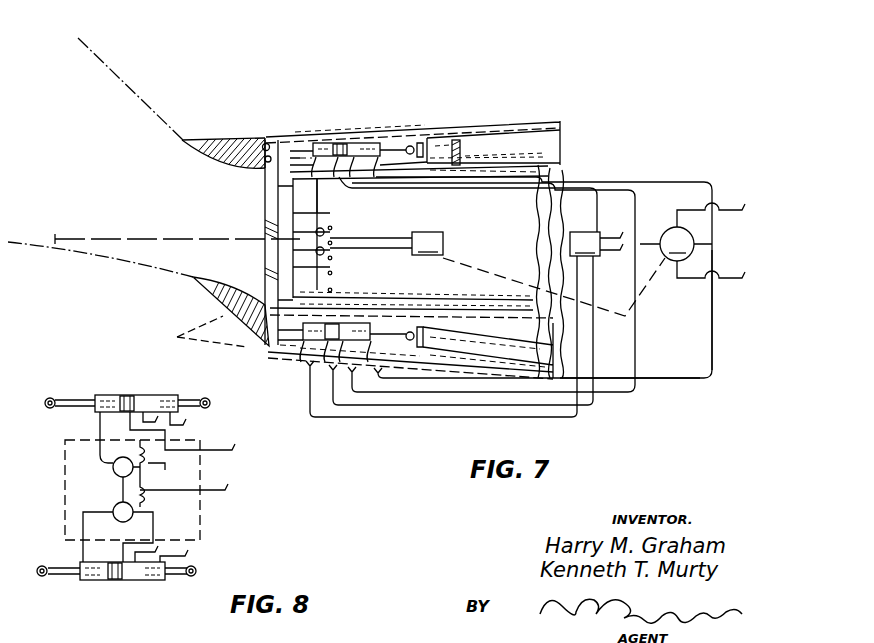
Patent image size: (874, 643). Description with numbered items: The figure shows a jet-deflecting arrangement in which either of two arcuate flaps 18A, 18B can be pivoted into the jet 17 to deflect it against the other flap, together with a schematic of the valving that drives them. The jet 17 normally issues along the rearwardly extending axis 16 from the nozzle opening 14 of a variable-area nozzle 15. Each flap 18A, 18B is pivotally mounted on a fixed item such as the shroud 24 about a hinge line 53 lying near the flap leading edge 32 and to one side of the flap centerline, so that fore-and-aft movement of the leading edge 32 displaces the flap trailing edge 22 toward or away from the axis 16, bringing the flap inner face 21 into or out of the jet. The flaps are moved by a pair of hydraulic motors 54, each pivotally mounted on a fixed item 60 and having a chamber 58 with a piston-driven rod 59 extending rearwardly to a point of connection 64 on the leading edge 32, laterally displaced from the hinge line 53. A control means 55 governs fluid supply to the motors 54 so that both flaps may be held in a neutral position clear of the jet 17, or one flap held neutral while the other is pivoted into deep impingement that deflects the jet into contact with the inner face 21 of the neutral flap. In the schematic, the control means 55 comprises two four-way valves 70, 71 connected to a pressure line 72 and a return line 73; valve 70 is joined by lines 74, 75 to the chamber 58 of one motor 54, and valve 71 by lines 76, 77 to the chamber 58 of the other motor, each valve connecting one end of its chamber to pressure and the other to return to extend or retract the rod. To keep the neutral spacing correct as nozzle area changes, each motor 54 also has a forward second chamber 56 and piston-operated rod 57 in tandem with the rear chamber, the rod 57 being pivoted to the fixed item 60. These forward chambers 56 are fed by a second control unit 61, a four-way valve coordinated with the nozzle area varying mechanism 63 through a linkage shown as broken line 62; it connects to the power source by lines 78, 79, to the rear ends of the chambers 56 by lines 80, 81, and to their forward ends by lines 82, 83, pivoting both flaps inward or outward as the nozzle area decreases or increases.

In FIG. 7, the nozzle opening 14 is at (300, 258).
In FIG. 7, the nozzle 15 is at (548, 176).
In FIG. 7, the rearwardly extending axis 16 is at (57, 238).
In FIG. 7, the jet 17 is at (112, 72).
In FIG. 7, the flap 18A is at (211, 160).
In FIG. 7, the flap 18B is at (212, 294).
In FIG. 7, the flap inner face 21 is at (228, 170).
In FIG. 7, the flap trailing edge 22 is at (183, 141).
In FIG. 7, the shroud 24 is at (548, 165).
In FIG. 7, the flap leading edge 32 is at (279, 140).
In FIG. 7, the hinge line 53 is at (267, 163).
In FIG. 7, the motor 54 is at (323, 135).
In FIG. 8, the motor 54 is at (115, 389).
In FIG. 7, the control means 55 is at (585, 244).
In FIG. 8, the control means 55 is at (65, 450).
In FIG. 7, the second chamber 56 is at (351, 143).
In FIG. 7, the piston-operated rod 57 is at (398, 144).
In FIG. 7, the chamber 58 is at (336, 143).
In FIG. 8, the chamber 58 is at (126, 395).
In FIG. 7, the piston-driven rod 59 is at (302, 140).
In FIG. 7, the fixed item 60 is at (493, 146).
In FIG. 7, the second control unit 61 is at (676, 244).
In FIG. 7, the connection or linkage 62 is at (471, 271).
In FIG. 7, the nozzle area varying mechanism 63 is at (386, 243).
In FIG. 7, the point of connection 64 is at (264, 144).
In FIG. 8, the four-way valve 70 is at (113, 468).
In FIG. 8, the four-way valve 71 is at (115, 507).
In FIG. 7, the pressure line 72 is at (615, 225).
In FIG. 8, the pressure line 72 is at (218, 449).
In FIG. 7, the return line 73 is at (614, 261).
In FIG. 8, the return line 73 is at (189, 498).
In FIG. 8, the line 74 is at (100, 446).
In FIG. 8, the line 75 is at (166, 471).
In FIG. 8, the line 76 is at (83, 548).
In FIG. 8, the line 77 is at (153, 521).
In FIG. 7, the line 78 is at (725, 209).
In FIG. 7, the line 79 is at (736, 280).
In FIG. 7, the line 80 is at (712, 187).
In FIG. 7, the line 81 is at (712, 356).
In FIG. 7, the line 82 is at (637, 219).
In FIG. 7, the line 83 is at (618, 379).